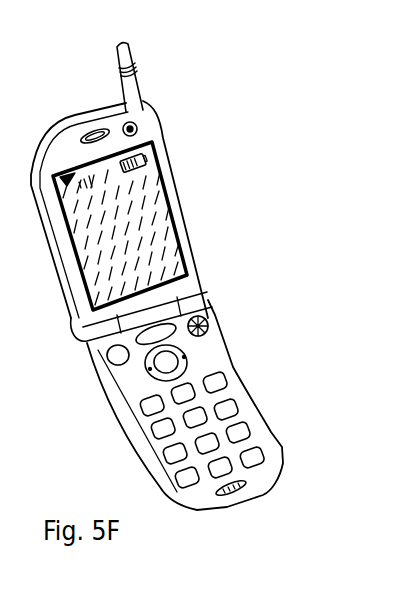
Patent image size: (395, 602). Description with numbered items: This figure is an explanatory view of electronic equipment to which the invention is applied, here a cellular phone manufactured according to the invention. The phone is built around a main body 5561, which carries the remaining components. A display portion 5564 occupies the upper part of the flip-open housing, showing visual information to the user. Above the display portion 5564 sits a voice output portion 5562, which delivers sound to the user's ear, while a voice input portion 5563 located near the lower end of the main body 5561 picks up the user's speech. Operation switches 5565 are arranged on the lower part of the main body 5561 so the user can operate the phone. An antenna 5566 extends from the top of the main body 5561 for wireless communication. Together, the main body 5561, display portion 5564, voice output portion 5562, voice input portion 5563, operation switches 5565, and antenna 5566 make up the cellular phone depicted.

The main body 5561 is at (118, 387).
The voice output portion 5562 is at (155, 131).
The voice input portion 5563 is at (253, 481).
The display portion 5564 is at (140, 223).
The operation switches 5565 is at (208, 336).
The antenna 5566 is at (137, 79).